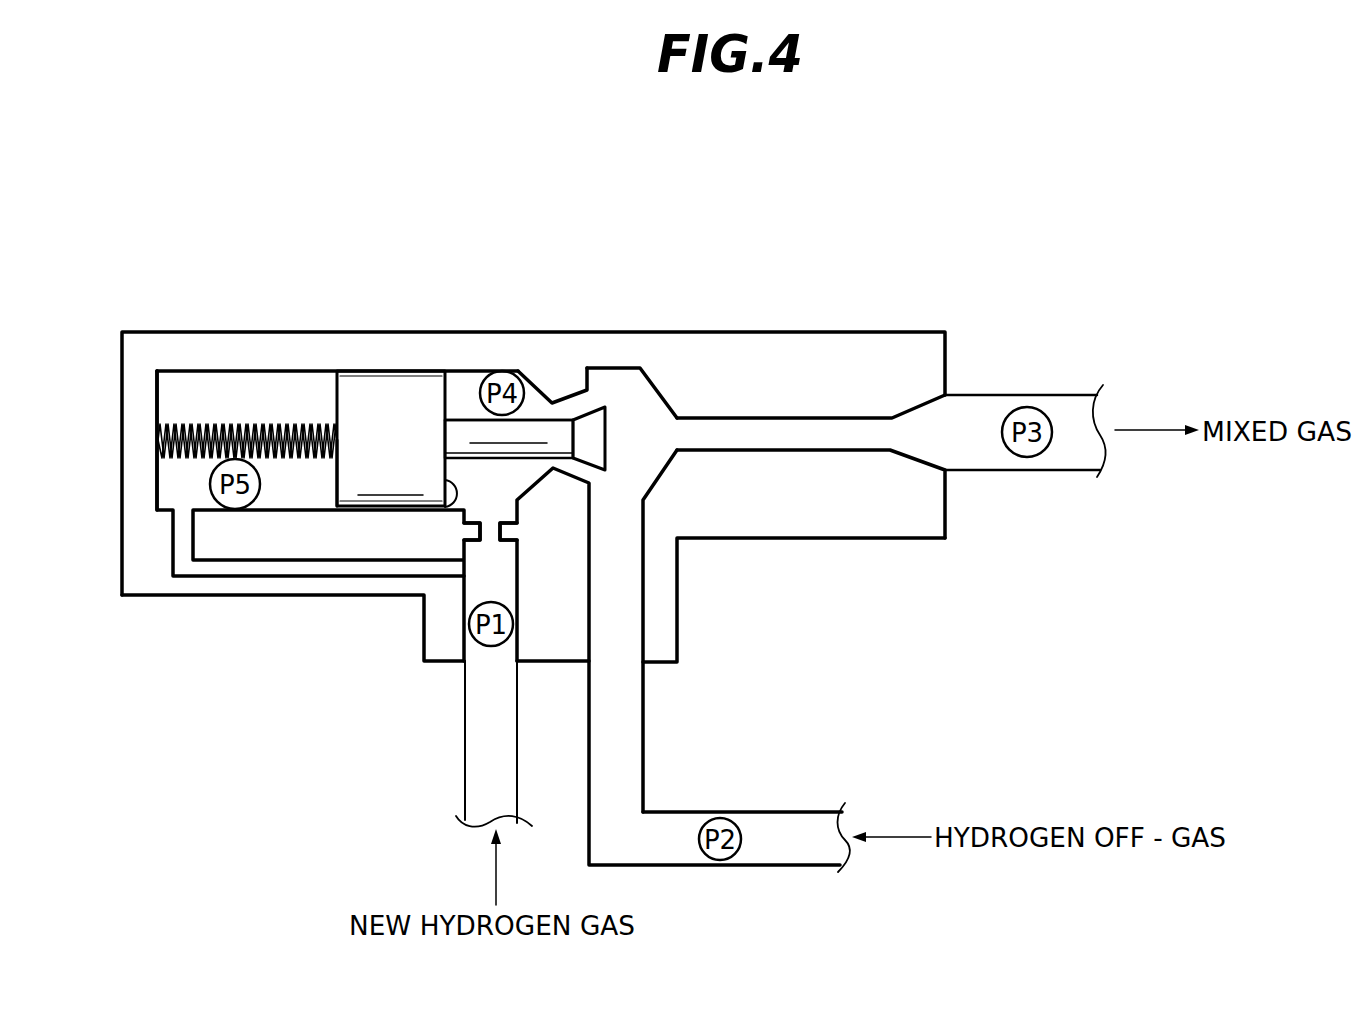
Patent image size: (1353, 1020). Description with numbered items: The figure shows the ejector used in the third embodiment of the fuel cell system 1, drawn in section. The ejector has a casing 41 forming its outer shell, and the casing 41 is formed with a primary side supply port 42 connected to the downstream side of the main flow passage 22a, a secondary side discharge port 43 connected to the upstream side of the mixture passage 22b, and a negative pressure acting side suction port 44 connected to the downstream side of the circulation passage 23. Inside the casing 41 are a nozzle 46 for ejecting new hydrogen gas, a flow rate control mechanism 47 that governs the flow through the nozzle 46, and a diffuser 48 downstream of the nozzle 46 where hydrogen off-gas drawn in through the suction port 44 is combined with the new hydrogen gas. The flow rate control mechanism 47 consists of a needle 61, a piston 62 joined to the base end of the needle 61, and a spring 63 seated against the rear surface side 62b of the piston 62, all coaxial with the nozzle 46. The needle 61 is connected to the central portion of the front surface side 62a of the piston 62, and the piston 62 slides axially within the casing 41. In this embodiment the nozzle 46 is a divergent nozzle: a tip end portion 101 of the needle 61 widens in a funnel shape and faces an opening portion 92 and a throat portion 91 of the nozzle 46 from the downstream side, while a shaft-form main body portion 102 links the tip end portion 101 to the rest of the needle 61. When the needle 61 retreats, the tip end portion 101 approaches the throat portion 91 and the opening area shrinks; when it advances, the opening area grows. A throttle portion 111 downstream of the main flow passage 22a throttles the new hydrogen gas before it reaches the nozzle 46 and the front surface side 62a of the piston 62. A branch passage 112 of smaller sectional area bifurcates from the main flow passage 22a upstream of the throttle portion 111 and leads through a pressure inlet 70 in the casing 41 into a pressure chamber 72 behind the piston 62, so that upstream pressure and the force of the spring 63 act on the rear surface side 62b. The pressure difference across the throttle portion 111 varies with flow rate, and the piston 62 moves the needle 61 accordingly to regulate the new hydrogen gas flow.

The fuel cell system 1 is at (112, 258).
The main flow passage 22a is at (495, 743).
The mixture passage 22b is at (1067, 458).
The circulation passage 23 is at (660, 832).
The casing 41 is at (807, 513).
The primary side supply port 42 is at (483, 583).
The secondary side discharge port 43 is at (923, 447).
The negative pressure acting side suction port 44 is at (617, 613).
The nozzle 46 is at (716, 284).
The flow rate control mechanism 47 is at (417, 263).
The diffuser 48 is at (820, 428).
The needle 61 is at (462, 418).
The piston 62 is at (363, 380).
The front surface side of the piston 62a is at (460, 483).
The rear surface side of the piston 62b is at (333, 478).
The spring 63 is at (183, 422).
The pressure inlet 70 is at (183, 537).
The pressure chamber 72 is at (168, 482).
The throat portion 91 is at (552, 403).
The opening portion 92 is at (587, 390).
The tip end portion 101 is at (593, 438).
The shaft-form main body portion 102 is at (478, 432).
The throttle portion 111 is at (478, 542).
The branch passage 112 is at (243, 568).